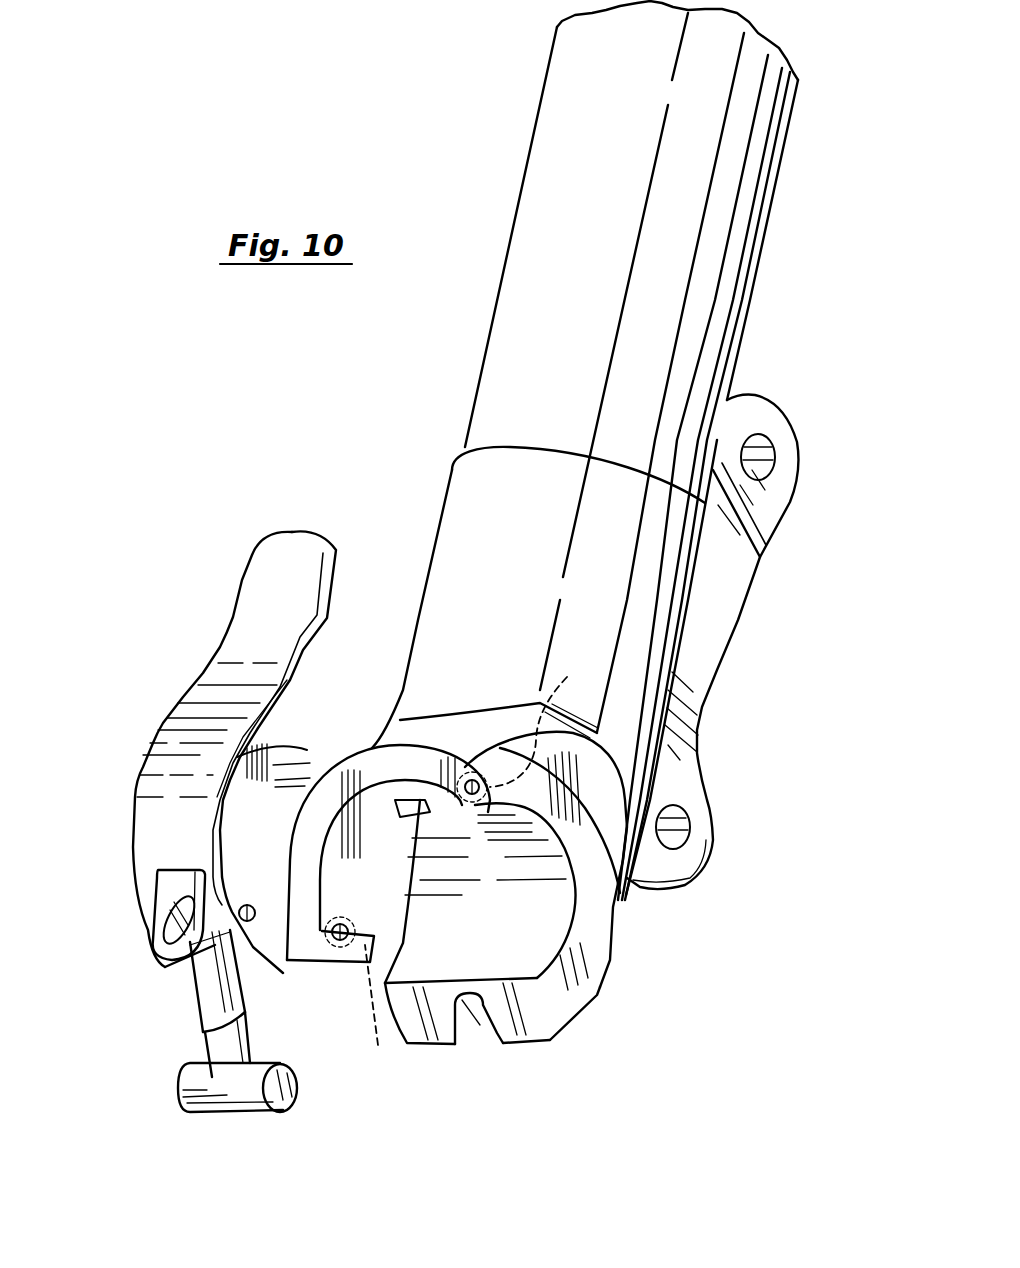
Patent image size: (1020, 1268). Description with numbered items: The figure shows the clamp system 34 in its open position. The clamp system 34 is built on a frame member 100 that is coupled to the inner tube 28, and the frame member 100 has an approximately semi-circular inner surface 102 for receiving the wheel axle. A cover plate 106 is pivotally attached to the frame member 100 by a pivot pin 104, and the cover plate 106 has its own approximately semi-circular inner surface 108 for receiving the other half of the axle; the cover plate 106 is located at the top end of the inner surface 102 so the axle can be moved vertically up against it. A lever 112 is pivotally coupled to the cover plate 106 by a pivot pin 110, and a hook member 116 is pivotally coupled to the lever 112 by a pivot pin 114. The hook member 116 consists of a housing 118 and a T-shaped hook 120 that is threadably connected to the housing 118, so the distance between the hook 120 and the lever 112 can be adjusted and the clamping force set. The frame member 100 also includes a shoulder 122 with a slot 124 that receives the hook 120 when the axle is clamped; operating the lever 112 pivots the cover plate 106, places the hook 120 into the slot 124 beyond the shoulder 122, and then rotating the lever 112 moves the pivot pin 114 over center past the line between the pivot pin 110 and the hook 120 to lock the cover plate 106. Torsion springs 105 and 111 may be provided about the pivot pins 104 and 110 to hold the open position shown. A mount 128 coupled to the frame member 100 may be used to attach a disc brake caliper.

The inner tube 28 is at (702, 345).
The mount 128 is at (725, 572).
The clamp system 34 is at (765, 638).
The cover plate 106 is at (415, 753).
The torsion spring 105 is at (548, 716).
The pivot pin 104 is at (472, 796).
The inner surface 108 is at (387, 805).
The inner surface 102 is at (530, 915).
The frame member 100 is at (580, 945).
The shoulder 122 is at (543, 1042).
The slot 124 is at (483, 1046).
The lever 112 is at (177, 757).
The pivot pin 114 is at (256, 925).
The pivot pin 110 is at (345, 940).
The torsion spring 111 is at (384, 1010).
The housing 118 is at (190, 970).
The hook member 116 is at (190, 1000).
The hook 120 is at (240, 1113).